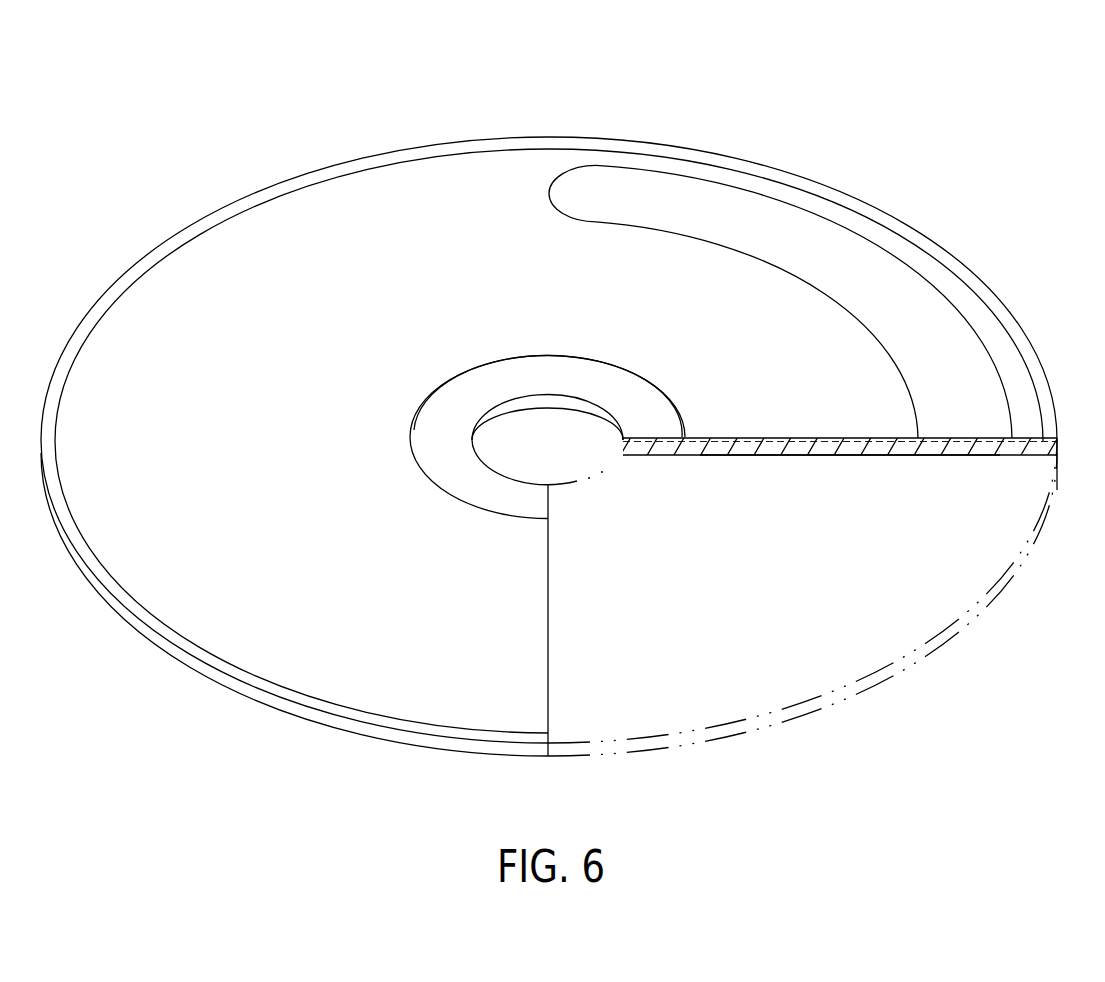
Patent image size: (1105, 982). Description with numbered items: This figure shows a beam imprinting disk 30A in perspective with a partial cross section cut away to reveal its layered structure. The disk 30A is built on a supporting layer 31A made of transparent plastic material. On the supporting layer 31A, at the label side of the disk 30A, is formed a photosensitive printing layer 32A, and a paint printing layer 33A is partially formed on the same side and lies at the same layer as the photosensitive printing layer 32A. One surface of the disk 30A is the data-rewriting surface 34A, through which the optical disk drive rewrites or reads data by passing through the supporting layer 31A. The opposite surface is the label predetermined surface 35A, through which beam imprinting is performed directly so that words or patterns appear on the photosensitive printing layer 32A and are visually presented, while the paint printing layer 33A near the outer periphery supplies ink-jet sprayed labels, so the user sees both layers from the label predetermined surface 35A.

The disk 30A is at (812, 181).
The supporting layer 31A is at (935, 448).
The photosensitive printing layer 32A is at (837, 437).
The paint printing layer 33A is at (963, 437).
The data-rewriting surface 34A is at (840, 456).
The label predetermined surface 35A is at (582, 193).